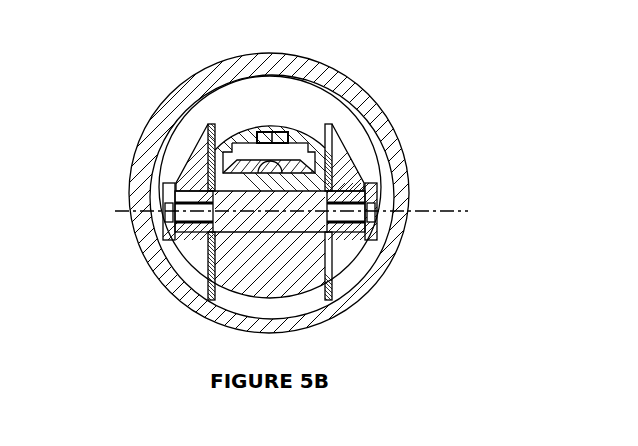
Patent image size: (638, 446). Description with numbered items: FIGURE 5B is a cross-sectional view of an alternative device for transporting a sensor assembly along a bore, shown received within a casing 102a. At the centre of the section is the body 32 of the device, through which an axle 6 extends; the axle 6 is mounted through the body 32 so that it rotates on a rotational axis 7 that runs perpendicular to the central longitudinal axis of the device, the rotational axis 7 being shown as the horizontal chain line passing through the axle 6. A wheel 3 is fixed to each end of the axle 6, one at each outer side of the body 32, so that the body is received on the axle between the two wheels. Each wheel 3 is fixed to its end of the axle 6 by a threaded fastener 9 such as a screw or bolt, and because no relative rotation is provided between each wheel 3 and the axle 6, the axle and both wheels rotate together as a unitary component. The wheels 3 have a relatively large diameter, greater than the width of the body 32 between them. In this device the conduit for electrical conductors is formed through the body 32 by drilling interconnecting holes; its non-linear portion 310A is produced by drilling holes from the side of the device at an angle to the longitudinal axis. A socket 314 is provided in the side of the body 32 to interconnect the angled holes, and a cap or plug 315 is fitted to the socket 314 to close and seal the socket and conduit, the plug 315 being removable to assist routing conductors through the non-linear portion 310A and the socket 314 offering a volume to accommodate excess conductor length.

The casing 102a is at (263, 71).
The non-linear portion of the conduit 310A is at (262, 163).
The cap or plug 315 is at (292, 147).
The wheel 3 is at (340, 132).
The rotational axis 7 is at (443, 208).
The socket 314 is at (247, 167).
The threaded fastener 9 is at (175, 232).
The axle 6 is at (287, 215).
The body 32 is at (270, 258).